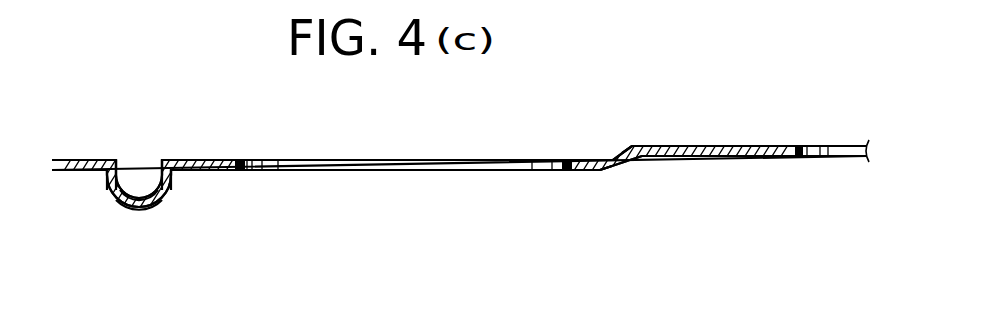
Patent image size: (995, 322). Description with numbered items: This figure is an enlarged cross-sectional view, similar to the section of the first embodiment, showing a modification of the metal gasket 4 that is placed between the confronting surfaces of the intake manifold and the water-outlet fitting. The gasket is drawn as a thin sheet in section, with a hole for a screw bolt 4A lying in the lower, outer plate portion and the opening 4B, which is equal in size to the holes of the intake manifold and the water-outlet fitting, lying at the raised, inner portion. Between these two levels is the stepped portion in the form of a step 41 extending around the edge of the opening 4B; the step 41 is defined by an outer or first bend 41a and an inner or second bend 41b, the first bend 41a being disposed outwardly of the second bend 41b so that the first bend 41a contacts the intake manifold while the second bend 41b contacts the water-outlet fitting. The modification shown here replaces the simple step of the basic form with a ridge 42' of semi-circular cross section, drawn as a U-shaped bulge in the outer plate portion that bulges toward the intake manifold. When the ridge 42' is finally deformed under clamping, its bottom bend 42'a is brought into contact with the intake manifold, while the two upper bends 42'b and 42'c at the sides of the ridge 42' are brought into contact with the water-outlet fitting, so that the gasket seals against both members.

The metal gasket 4 is at (695, 134).
The hole for a screw bolt 4A is at (293, 160).
The opening 4B is at (823, 145).
The step 41 is at (618, 152).
The first bend 41a is at (597, 173).
The second bend 41b is at (633, 145).
The ridge 42' is at (170, 199).
The bend 42'a is at (144, 231).
The bend 42'b is at (194, 139).
The bend 42'c is at (112, 139).